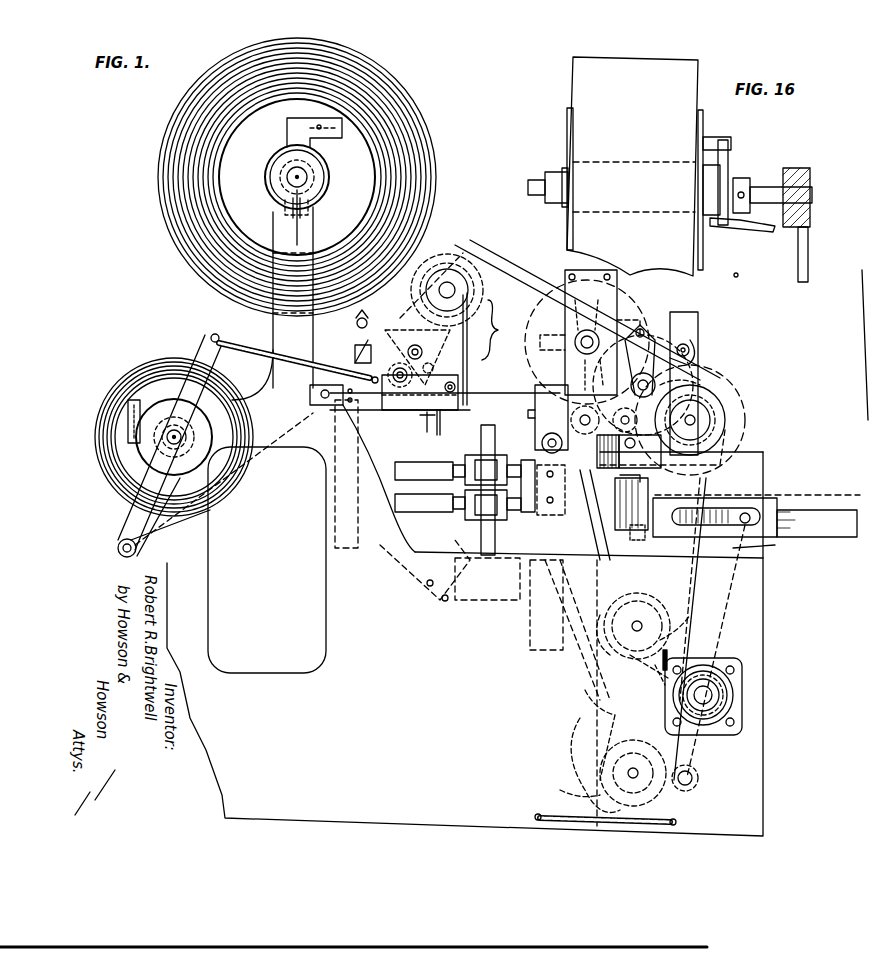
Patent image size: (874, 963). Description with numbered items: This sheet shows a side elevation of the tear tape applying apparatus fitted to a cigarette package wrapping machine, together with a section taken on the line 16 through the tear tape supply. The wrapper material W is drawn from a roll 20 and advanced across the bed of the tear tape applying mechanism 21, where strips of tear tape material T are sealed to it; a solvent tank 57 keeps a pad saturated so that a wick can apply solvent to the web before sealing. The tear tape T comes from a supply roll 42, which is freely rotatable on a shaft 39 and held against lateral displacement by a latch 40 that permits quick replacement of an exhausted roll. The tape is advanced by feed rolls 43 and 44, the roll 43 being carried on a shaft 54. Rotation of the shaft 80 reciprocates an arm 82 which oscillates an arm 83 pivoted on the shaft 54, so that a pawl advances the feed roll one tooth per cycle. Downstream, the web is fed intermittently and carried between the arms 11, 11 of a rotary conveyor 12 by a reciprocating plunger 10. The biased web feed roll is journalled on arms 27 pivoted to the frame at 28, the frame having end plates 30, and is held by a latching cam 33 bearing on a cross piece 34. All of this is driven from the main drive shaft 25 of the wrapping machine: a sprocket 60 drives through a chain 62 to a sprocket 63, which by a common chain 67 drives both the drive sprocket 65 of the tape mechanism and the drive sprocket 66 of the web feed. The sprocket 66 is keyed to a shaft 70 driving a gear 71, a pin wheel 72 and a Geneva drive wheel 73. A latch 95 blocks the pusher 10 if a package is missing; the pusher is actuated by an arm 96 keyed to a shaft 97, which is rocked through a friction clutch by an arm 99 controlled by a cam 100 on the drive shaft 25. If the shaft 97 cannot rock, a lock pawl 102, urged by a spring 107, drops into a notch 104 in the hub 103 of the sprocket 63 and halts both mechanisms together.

In FIG. 1, the section line 16— 16 is at (340, 30).
In FIG. 1, the shaft 39 is at (295, 177).
In FIG. 16, the shaft 39 is at (535, 178).
In FIG. 1, the latch 40 is at (285, 210).
In FIG. 16, the latch 40 is at (738, 230).
In FIG. 1, the supply roll 42 is at (362, 178).
In FIG. 16, the supply roll 42 is at (568, 118).
In FIG. 1, the roll 20 is at (160, 390).
In FIG. 1, the wrapper material W is at (268, 438).
In FIG. 1, the solvent tank 57 is at (355, 352).
In FIG. 1, the arm 82 is at (357, 325).
In FIG. 1, the arm 83 is at (388, 377).
In FIG. 1, the feed roll 44 is at (420, 345).
In FIG. 1, the feed roll 43 is at (435, 461).
In FIG. 1, the shaft 54 is at (437, 390).
In FIG. 1, the shaft 80 is at (448, 288).
In FIG. 1, the tear tape material T is at (420, 262).
In FIG. 1, the drive sprocket 65 is at (470, 280).
In FIG. 1, the tear tape applying mechanism 21 is at (500, 330).
In FIG. 1, the Geneva drive wheel 73 is at (600, 320).
In FIG. 1, the pin wheel 72 is at (652, 335).
In FIG. 1, the latching cam 33 is at (698, 330).
In FIG. 1, the arms 27 is at (700, 370).
In FIG. 1, the cross piece 34 is at (698, 373).
In FIG. 1, the shaft 70 is at (695, 418).
In FIG. 1, the gear 71 is at (697, 420).
In FIG. 1, the drive sprocket 66 is at (710, 466).
In FIG. 1, the chain 67 is at (756, 506).
In FIG. 1, the reciprocating plunger 10 is at (694, 482).
In FIG. 1, the end plates 30 is at (650, 473).
In FIG. 1, the latch 95 is at (631, 507).
In FIG. 1, the pivot 28 is at (616, 437).
In FIG. 1, the rotary conveyor 12 is at (485, 440).
In FIG. 1, the arms 11 is at (432, 468).
In FIG. 1, the sprocket 63 is at (636, 592).
In FIG. 1, the hub 103 is at (587, 635).
In FIG. 1, the notch 104 is at (684, 624).
In FIG. 1, the spring 107 is at (686, 650).
In FIG. 1, the shaft 97 is at (703, 695).
In FIG. 1, the chain 62 is at (588, 727).
In FIG. 1, the lock pawl 102 is at (636, 674).
In FIG. 1, the cam 100 is at (575, 742).
In FIG. 1, the main drive shaft 25 is at (635, 770).
In FIG. 1, the sprocket 60 is at (605, 798).
In FIG. 1, the arm 99 is at (698, 772).
In FIG. 1, the arm 96 is at (755, 548).